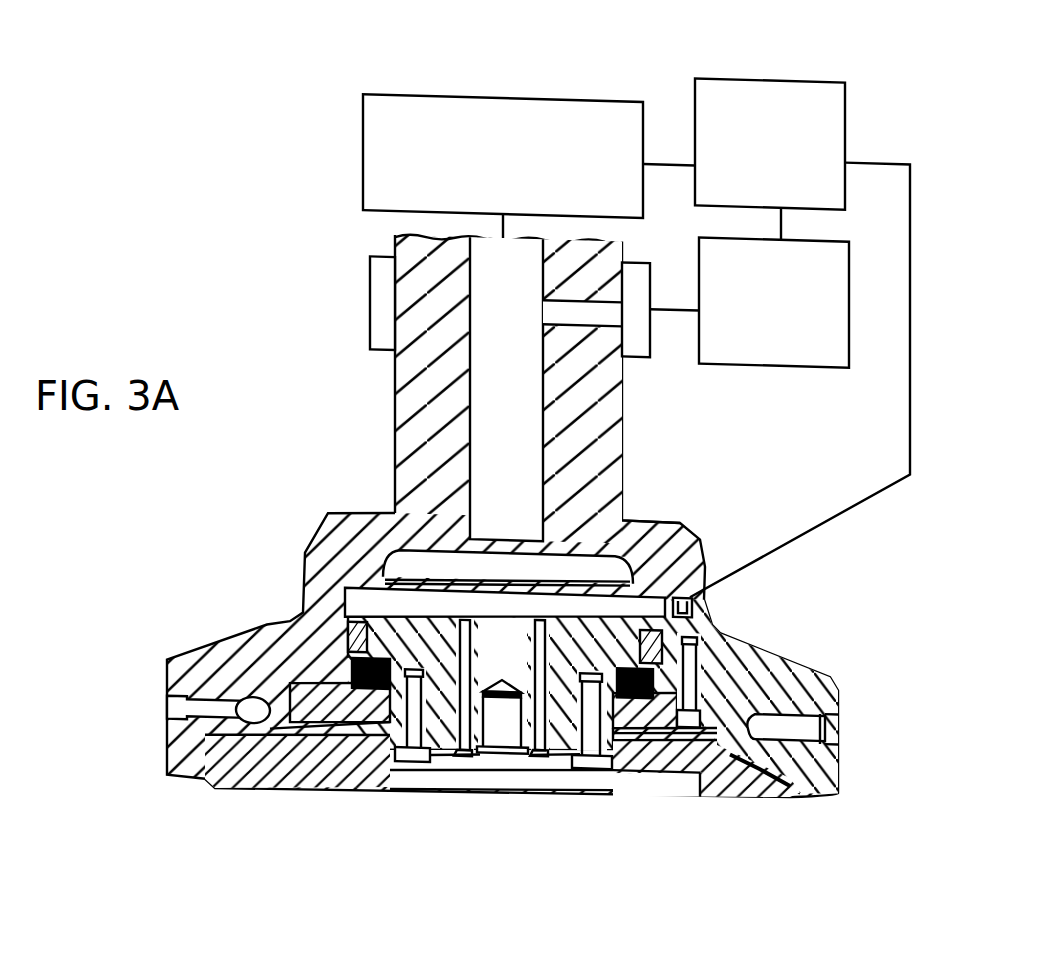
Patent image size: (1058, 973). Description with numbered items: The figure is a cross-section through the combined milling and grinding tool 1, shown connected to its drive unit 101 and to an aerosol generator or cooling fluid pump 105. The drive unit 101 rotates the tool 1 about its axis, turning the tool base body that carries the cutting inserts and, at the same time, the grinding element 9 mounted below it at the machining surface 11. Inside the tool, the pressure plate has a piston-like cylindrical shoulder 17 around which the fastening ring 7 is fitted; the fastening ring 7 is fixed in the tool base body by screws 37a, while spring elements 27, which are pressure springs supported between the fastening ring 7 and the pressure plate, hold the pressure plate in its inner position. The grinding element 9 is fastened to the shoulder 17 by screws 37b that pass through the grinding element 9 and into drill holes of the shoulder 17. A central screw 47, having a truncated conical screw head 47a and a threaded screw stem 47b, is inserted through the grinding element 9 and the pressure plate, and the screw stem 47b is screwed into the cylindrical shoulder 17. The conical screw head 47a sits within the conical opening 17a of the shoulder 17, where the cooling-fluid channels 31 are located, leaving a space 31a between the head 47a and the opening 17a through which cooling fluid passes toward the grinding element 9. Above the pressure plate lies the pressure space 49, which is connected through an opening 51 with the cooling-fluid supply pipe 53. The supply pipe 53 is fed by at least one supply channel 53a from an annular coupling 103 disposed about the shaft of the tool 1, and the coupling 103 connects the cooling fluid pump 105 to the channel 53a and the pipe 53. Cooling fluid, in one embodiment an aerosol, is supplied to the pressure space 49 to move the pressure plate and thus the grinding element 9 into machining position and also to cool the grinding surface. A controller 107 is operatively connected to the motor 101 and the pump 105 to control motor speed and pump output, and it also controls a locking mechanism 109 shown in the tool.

The tool 1 is at (655, 472).
The fastening ring 7 is at (767, 660).
The grinding element 9 is at (768, 785).
The machining surface 11 is at (367, 797).
The cylindrical shoulder 17 is at (447, 764).
The conical opening 17a is at (455, 766).
The spring elements 27 is at (340, 684).
The cooling-fluid channels 31 is at (545, 761).
The space 31a is at (572, 788).
The screws 37a is at (703, 659).
The screws 37b is at (600, 767).
The central screw 47 is at (500, 742).
The conical screw head 47a is at (518, 763).
The screw stem 47b is at (480, 766).
The pressure space 49 is at (400, 558).
The opening 51 is at (505, 545).
The cooling-fluid supply pipe 53 is at (503, 417).
The supply channel 53a is at (595, 316).
The drive unit 101 is at (363, 152).
The annular coupling 103 is at (370, 306).
The cooling fluid pump 105 is at (830, 358).
The controller 107 is at (783, 72).
The locking mechanism 109 is at (682, 592).